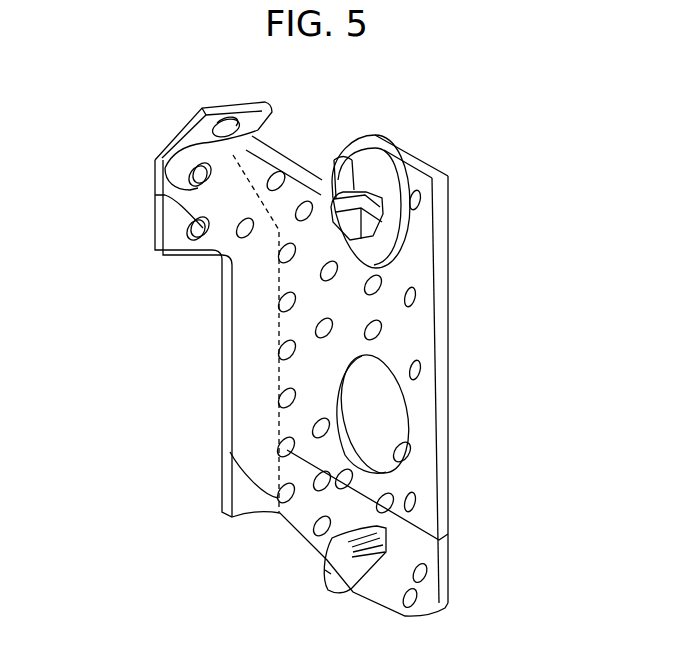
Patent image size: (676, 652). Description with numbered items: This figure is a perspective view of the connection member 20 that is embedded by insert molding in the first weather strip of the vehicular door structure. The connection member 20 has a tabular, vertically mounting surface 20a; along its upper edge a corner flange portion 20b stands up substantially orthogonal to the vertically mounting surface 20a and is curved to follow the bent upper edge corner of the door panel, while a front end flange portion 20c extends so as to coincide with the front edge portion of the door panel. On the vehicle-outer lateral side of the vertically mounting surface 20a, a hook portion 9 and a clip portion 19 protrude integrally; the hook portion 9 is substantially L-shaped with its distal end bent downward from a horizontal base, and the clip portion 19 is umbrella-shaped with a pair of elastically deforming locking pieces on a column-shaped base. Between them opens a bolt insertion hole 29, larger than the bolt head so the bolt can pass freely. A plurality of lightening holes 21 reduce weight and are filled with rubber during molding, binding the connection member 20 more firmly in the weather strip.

The connection member 20 is at (462, 247).
The vertically mounting surface 20a is at (417, 397).
The corner flange portion 20b is at (265, 108).
The front end flange portion 20c is at (255, 323).
The clip portion 19 is at (336, 162).
The lightening holes 21 is at (190, 173).
The bolt insertion hole 29 is at (406, 450).
The hook portion 9 is at (325, 575).